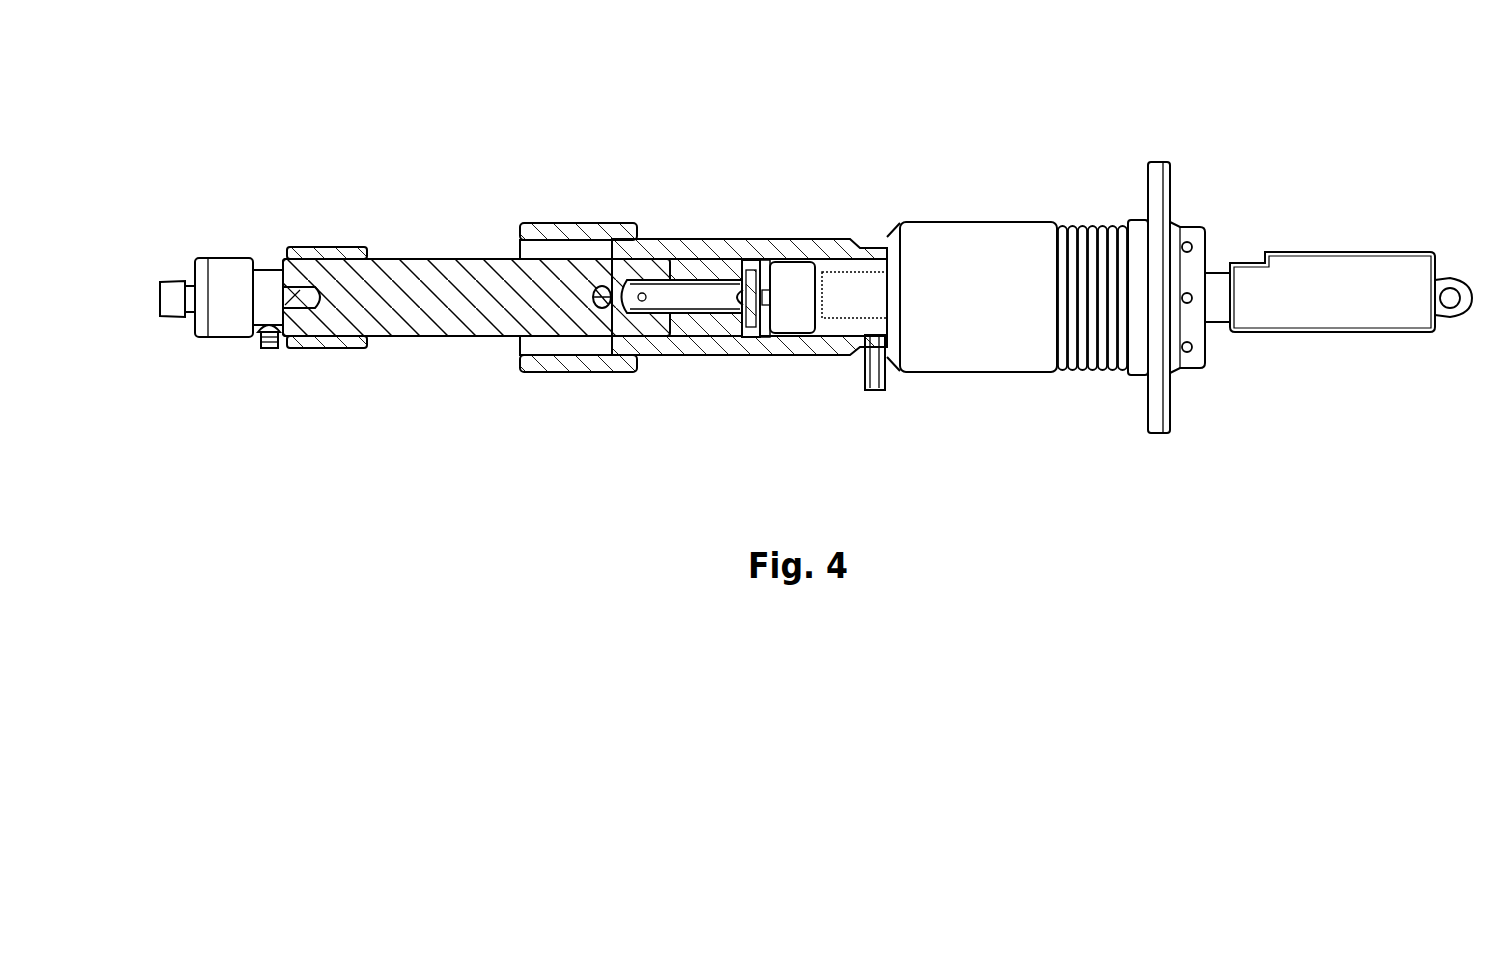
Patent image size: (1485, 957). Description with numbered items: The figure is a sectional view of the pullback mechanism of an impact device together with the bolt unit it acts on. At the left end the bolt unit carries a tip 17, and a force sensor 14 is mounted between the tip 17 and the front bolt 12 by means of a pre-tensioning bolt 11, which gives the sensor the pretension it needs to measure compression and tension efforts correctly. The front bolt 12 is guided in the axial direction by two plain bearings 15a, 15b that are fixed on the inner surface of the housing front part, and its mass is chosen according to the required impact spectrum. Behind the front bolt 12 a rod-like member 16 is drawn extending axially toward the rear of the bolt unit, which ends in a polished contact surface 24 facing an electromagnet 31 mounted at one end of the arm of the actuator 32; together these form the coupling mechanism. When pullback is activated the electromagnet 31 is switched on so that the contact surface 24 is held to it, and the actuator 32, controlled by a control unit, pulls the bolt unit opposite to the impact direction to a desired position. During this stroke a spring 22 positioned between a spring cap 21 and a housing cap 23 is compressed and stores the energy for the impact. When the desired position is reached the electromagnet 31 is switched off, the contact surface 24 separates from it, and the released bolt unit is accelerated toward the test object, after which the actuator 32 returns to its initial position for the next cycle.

The pre-tensioning bolt 11 is at (302, 287).
The front bolt 12 is at (452, 265).
The force sensor 14 is at (270, 350).
The plain bearing 15a is at (335, 348).
The plain bearing 15b is at (578, 377).
The push rod 16 is at (698, 275).
The tip 17 is at (183, 277).
The spring cap 21 is at (977, 217).
The spring 22 is at (1098, 215).
The housing cap 23 is at (1160, 162).
The polished contact surface 24 is at (762, 262).
The electromagnet 31 is at (795, 262).
The actuator 32 is at (1315, 267).